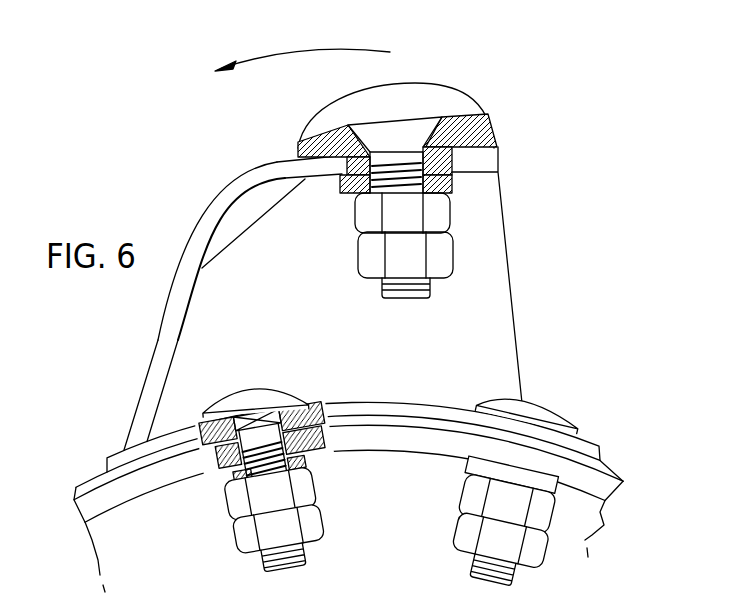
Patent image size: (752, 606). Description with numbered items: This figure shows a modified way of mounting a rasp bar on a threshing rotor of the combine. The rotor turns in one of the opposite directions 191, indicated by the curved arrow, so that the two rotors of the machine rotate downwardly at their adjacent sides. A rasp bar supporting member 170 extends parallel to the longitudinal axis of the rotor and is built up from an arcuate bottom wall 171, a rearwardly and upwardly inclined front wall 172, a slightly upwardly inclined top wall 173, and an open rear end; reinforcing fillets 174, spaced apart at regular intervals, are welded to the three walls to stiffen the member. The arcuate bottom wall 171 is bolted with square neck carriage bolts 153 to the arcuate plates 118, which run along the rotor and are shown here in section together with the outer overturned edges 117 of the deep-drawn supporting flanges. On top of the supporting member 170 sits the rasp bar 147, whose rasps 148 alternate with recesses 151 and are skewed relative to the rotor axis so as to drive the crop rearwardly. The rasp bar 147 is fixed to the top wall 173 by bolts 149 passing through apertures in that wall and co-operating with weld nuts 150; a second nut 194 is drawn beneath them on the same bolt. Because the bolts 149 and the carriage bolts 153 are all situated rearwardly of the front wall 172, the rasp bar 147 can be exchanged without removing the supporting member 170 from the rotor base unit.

The outer overturned edges 117 is at (148, 490).
The arcuate plates 118 is at (97, 485).
The arcuate bottom wall 171 is at (108, 457).
The front wall 172 is at (161, 331).
The rasp bar supporting member 170 is at (194, 203).
The top wall 173 is at (283, 161).
The rasp bar 147 is at (459, 80).
The rasps 148 is at (482, 99).
The recesses 151 is at (333, 125).
The reinforcing fillets 174 is at (508, 253).
The weld nuts 150 is at (357, 218).
The lock nut 194 is at (362, 256).
The bolts 149 is at (420, 297).
The square neck carriage bolts 153 is at (258, 390).
The opposite directions 191 is at (334, 52).